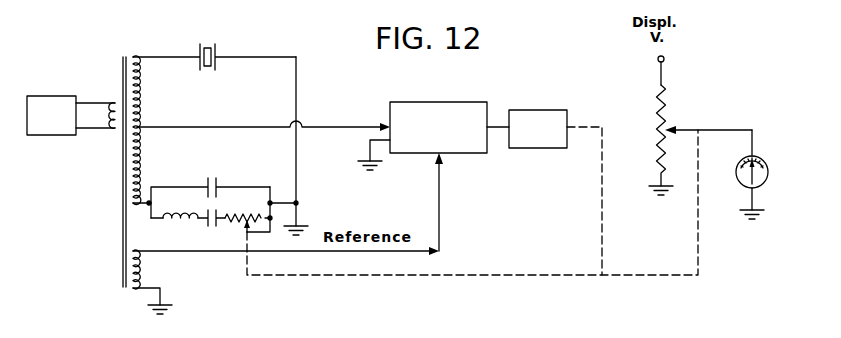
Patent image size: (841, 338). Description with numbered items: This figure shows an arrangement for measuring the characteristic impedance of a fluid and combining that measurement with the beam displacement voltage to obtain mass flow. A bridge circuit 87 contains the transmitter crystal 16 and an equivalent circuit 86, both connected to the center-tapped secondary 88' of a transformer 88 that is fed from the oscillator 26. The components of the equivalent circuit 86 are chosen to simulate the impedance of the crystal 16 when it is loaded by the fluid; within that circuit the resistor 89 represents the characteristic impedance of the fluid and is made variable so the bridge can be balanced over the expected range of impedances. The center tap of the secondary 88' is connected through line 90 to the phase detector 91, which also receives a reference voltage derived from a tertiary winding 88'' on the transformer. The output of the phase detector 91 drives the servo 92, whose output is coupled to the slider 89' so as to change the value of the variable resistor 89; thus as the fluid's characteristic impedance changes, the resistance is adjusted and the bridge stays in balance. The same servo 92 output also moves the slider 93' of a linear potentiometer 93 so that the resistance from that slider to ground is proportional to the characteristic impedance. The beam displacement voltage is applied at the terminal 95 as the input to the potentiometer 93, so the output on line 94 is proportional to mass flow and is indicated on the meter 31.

The transmitter crystal 16 is at (209, 46).
The oscillator 26 is at (58, 96).
The meter 31 is at (768, 168).
The equivalent circuit 86 is at (195, 178).
The bridge circuit 87 is at (226, 105).
The transformer 88 is at (117, 161).
The center-tapped secondary 88' is at (155, 130).
The tertiary winding 88'' is at (160, 282).
The variable resistor 89 is at (243, 206).
The slider 89' is at (232, 235).
The line 90 is at (245, 127).
The phase detector 91 is at (445, 102).
The servo 92 is at (543, 110).
The linear potentiometer 93 is at (646, 140).
The slider 93' is at (708, 116).
The line 94 is at (722, 130).
The displacement voltage terminal 95 is at (664, 60).